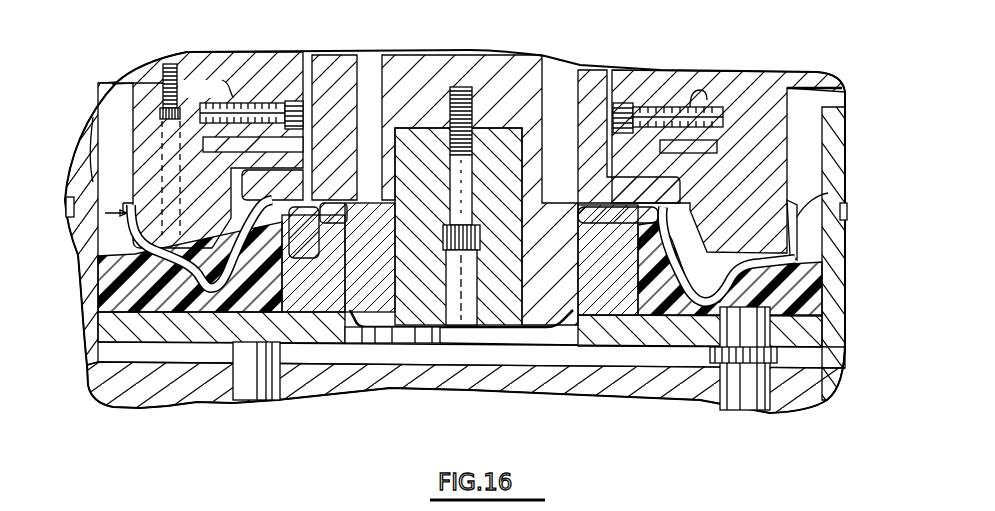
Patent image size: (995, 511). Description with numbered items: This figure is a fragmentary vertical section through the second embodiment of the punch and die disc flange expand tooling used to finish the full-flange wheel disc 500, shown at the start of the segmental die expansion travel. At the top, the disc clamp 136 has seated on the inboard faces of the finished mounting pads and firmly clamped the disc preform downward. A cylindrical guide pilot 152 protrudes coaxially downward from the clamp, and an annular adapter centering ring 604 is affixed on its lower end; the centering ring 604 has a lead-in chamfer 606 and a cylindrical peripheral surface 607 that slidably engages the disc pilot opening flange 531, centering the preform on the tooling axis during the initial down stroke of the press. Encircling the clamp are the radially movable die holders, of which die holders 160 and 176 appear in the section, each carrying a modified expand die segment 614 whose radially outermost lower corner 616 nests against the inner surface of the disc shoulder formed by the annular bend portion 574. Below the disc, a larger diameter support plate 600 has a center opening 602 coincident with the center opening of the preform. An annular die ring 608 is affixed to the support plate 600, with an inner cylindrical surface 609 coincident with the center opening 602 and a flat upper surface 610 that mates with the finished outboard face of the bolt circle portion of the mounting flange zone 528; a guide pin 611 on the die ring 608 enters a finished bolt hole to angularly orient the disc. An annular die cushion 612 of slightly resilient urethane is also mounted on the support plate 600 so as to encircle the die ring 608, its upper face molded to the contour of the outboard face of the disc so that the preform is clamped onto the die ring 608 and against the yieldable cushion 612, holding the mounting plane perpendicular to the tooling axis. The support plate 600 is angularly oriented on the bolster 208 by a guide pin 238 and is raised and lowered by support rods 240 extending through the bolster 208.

The die holder 160 is at (236, 51).
The disc clamp 136 is at (517, 46).
The die holder 176 is at (696, 65).
The expand die segment 614 is at (117, 82).
The guide pilot 152 is at (496, 148).
The wheel disc 500 is at (86, 103).
The disc pilot opening flange 531 is at (299, 127).
The mounting flange zone 528 is at (830, 214).
The radially outermost lower corner 616 is at (100, 255).
The guide pin 611 is at (320, 243).
The inner cylindrical surface 609 is at (313, 263).
The cylindrical peripheral surface 607 is at (340, 288).
The upper surface 610 is at (618, 260).
The die cushion 612 is at (818, 300).
The annular bend portion 574 is at (100, 308).
The support plate 600 is at (170, 333).
The support rod 240 is at (250, 387).
The center opening 602 is at (372, 328).
The lead-in chamfer 606 is at (352, 312).
The adapter centering ring 604 is at (547, 327).
The die ring 608 is at (613, 307).
The guide pin 238 is at (740, 397).
The bolster 208 is at (817, 397).